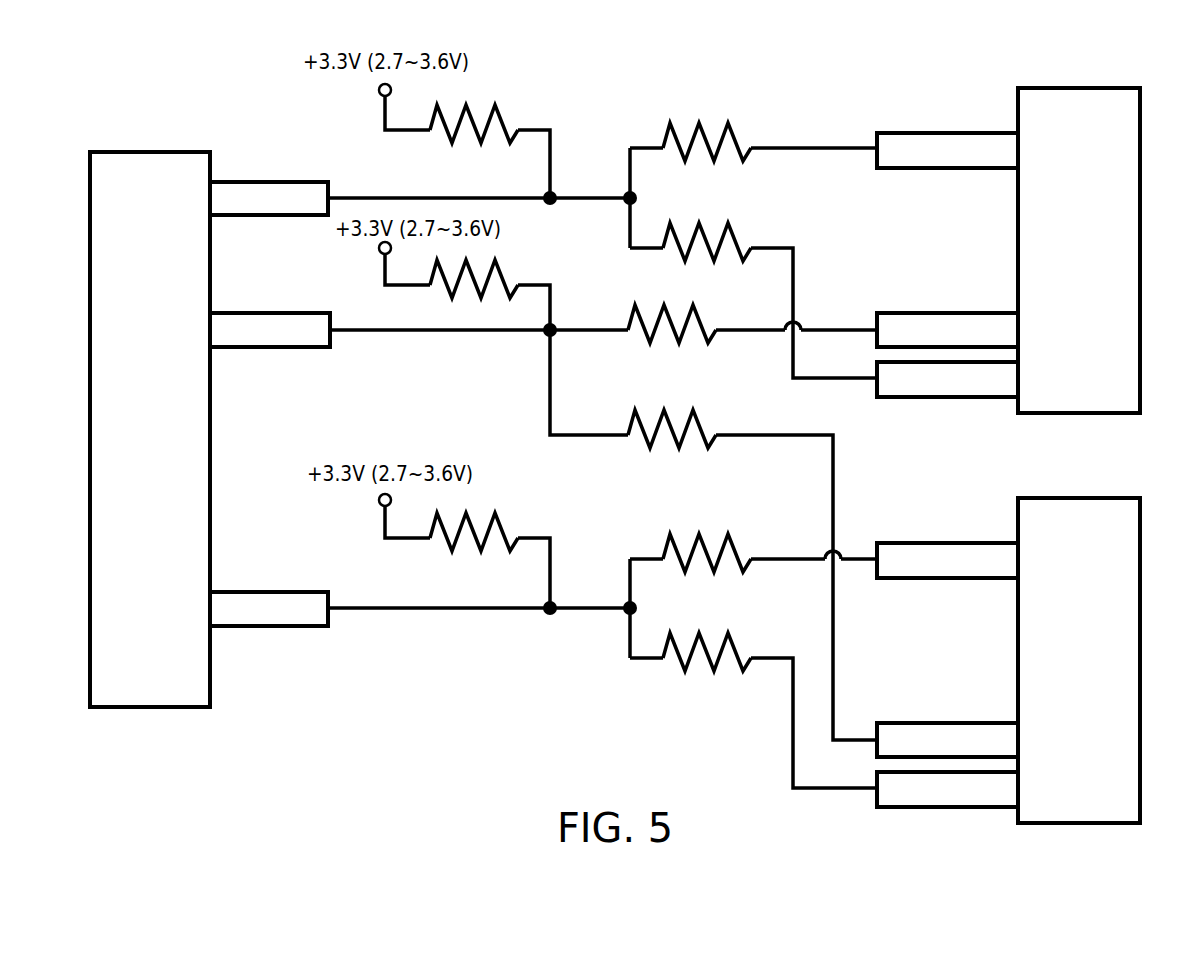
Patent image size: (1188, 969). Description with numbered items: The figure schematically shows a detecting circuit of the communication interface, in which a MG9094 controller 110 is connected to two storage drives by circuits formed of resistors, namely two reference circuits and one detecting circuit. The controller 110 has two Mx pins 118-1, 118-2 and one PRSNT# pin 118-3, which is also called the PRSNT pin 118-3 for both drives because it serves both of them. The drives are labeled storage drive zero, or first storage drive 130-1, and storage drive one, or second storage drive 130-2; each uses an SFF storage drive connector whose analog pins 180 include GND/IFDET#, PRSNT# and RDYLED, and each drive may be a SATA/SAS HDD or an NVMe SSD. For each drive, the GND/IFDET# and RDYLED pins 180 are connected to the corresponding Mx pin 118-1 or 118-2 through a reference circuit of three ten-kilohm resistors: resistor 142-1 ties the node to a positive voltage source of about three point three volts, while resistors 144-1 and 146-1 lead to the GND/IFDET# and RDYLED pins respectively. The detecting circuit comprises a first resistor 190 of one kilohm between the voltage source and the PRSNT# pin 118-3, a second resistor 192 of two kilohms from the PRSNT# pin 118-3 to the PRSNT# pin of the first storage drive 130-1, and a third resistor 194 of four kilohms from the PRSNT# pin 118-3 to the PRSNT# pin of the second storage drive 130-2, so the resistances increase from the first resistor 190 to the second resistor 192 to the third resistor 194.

The controller 110 is at (145, 152).
The Mx pin 118-1 is at (272, 182).
The Mx pin 118-2 is at (267, 592).
The PRSNT0-1 pin 118-3 is at (250, 313).
The first storage drive 130-1 is at (1060, 88).
The second storage drive 130-2 is at (1060, 498).
The resistor 142-1 is at (478, 105).
The resistor 144-1 is at (708, 120).
The resistor 146-1 is at (727, 223).
The analog pins 180 is at (975, 133).
The first resistor 190 is at (503, 278).
The second resistor 192 is at (698, 320).
The third resistor 194 is at (700, 430).